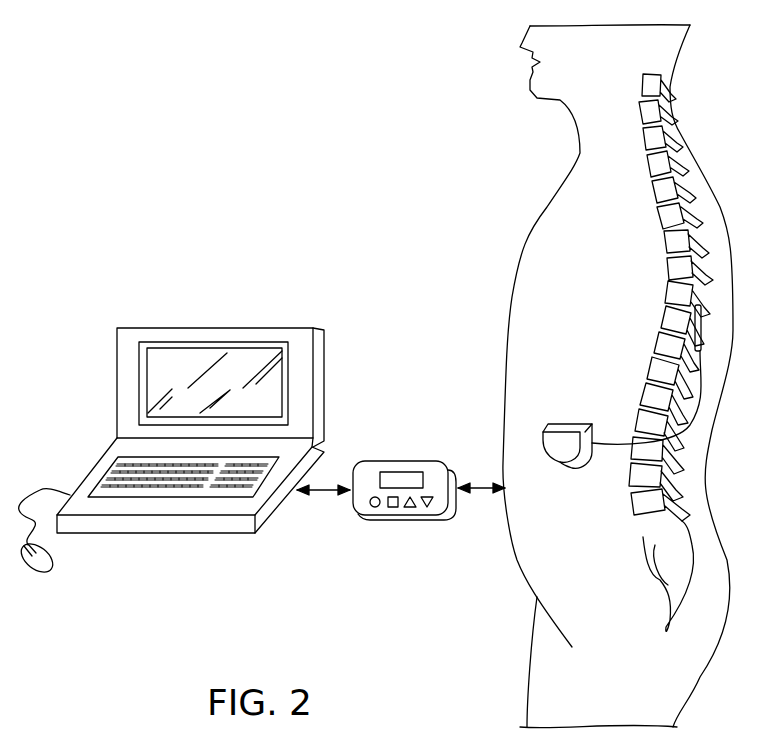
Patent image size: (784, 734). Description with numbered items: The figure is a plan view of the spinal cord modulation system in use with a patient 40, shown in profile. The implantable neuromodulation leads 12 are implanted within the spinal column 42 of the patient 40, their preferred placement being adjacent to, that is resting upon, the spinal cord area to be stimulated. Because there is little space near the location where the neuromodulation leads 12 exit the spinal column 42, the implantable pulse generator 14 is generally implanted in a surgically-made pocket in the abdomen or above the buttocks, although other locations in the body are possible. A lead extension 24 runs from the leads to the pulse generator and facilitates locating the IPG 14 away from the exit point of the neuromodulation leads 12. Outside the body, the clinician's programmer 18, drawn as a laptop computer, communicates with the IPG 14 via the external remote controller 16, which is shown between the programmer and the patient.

The implantable neuromodulation leads 12 is at (713, 332).
The implantable pulse generator 14 is at (565, 452).
The external remote controller 16 is at (423, 446).
The clinician's programmer 18 is at (202, 324).
The lead extension 24 is at (700, 402).
The patient 40 is at (518, 252).
The spinal column 42 is at (660, 307).